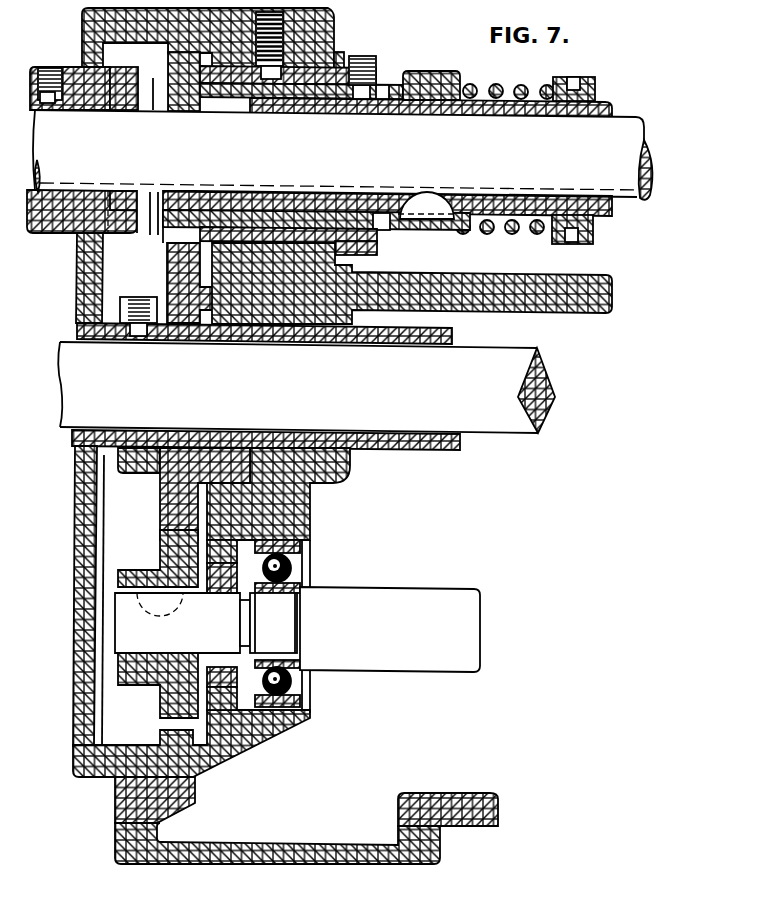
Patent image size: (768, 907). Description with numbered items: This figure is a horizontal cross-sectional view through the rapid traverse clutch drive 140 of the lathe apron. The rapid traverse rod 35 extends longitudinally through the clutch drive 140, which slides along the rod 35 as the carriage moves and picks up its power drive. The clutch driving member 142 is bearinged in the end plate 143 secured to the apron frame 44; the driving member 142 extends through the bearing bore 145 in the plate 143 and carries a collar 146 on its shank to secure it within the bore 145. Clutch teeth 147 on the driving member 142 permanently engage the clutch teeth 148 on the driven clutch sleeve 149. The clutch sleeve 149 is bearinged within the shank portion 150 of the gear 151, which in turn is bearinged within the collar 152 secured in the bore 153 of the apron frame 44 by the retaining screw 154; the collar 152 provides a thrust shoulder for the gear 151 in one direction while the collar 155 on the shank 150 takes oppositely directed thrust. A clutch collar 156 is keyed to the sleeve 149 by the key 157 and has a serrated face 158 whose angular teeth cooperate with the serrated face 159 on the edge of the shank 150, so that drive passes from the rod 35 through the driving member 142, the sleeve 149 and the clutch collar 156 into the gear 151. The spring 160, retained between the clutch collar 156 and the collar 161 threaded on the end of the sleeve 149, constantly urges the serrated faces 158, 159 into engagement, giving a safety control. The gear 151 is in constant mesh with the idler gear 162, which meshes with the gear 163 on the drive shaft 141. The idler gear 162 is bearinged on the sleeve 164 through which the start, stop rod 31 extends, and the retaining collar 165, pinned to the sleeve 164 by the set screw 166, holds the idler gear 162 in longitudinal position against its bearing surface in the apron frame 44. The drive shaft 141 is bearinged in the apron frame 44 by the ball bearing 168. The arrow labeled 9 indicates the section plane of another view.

The clutch drive 140 is at (339, 29).
The collar 155 is at (376, 63).
The collar 146 is at (60, 236).
The bearing bore 145 is at (65, 70).
The clutch driving member 142 is at (137, 68).
The gear 151 is at (194, 55).
The collar 152 is at (241, 85).
The retaining screw 154 is at (284, 98).
The bore 153 is at (268, 98).
The shank portion 150 is at (383, 80).
The serrated face 159 is at (405, 82).
The clutch sleeve 149 is at (613, 108).
The clutch collar 156 is at (455, 72).
The spring 160 is at (524, 84).
The collar 161 is at (592, 78).
The rapid traverse rod 35 is at (655, 185).
The clutch assembly 9 is at (73, 290).
The key 157 is at (443, 222).
The serrated face 158 is at (383, 230).
The clutch teeth 148 is at (157, 235).
The apron frame 44 is at (592, 311).
The sleeve 164 is at (80, 327).
The clutch teeth 147 is at (142, 233).
The set screw 166 is at (143, 297).
The start, stop rod 31 is at (553, 393).
The retaining collar 165 is at (78, 465).
The end plate 143 is at (77, 603).
The idler gear 162 is at (163, 490).
The gear 163 is at (163, 560).
The ball bearing 168 is at (300, 565).
The drive shaft 141 is at (425, 621).